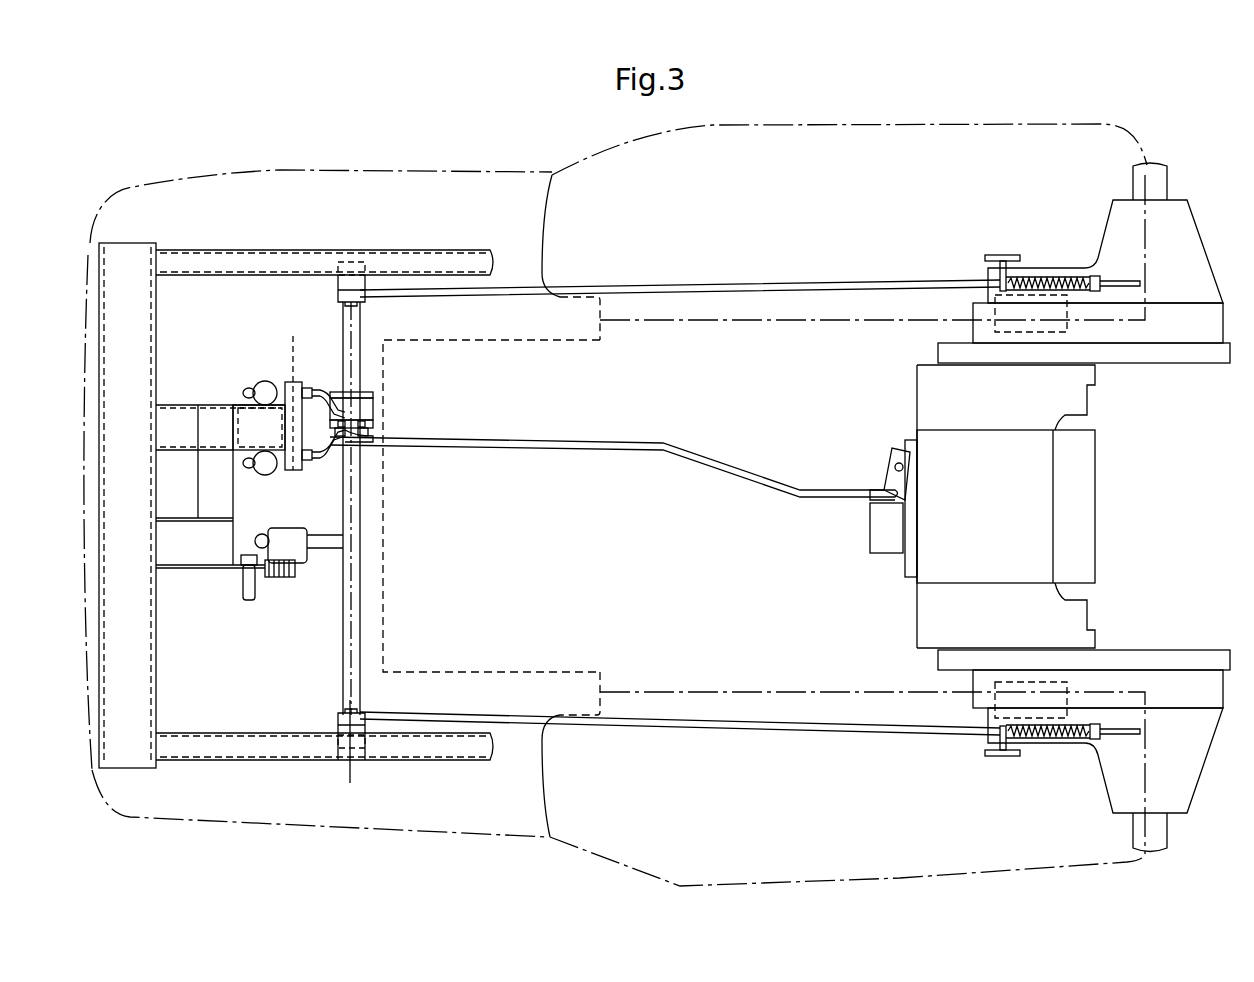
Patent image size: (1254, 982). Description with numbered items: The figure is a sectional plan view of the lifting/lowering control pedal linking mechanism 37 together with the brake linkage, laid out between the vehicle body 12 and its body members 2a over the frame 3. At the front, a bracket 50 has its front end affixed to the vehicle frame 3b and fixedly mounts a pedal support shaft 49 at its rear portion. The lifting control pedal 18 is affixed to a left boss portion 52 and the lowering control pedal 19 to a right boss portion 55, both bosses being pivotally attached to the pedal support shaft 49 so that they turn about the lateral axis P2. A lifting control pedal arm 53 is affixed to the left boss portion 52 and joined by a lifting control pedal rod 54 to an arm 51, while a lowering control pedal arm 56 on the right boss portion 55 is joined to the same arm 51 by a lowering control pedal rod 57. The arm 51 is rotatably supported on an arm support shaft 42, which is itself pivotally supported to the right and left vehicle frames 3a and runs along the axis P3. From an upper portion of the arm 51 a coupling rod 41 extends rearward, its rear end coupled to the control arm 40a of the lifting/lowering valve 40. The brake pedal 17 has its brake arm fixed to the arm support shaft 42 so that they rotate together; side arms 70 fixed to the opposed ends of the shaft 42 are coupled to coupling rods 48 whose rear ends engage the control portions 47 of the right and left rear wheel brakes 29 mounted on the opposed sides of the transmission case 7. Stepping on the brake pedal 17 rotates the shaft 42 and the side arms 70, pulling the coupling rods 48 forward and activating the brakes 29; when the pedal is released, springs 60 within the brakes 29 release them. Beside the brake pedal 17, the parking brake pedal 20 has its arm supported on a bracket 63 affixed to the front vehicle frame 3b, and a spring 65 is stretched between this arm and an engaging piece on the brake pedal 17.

The vehicle body 12 is at (185, 172).
The body frame side member 2a is at (620, 152).
The frame 3 is at (296, 507).
The right and left vehicle frames 3a is at (268, 250).
The vehicle frame 3b is at (150, 672).
The transmission case 7 is at (1093, 507).
The brake pedal 17 is at (300, 560).
The lifting control pedal 18 is at (262, 476).
The lowering control pedal 19 is at (262, 386).
The parking brake pedal 20 is at (250, 602).
The rear wheel brakes 29 is at (1022, 332).
The lifting/lowering control pedal linking mechanism 37 is at (380, 418).
The lifting/lowering valve 40 is at (888, 462).
The control arm 40a is at (905, 487).
The coupling rod 41 is at (630, 452).
The arm support shaft 42 is at (356, 540).
The control portions 47 is at (996, 256).
The coupling rods 48 is at (700, 290).
The pedal support shaft 49 is at (280, 430).
The bracket 50 is at (232, 405).
The arm 51 is at (374, 418).
The left boss portion 52 is at (292, 475).
The lifting control pedal arm 53 is at (315, 458).
The lifting control pedal rod 54 is at (326, 444).
The right boss portion 55 is at (290, 382).
The lowering control pedal arm 56 is at (318, 398).
The lowering control pedal rod 57 is at (345, 392).
The springs 60 is at (1045, 277).
The bracket 63 is at (218, 568).
The spring 65 is at (275, 580).
The side arms 70 is at (338, 288).
The lateral axis P2 is at (289, 390).
The pivot axis P3 is at (347, 758).